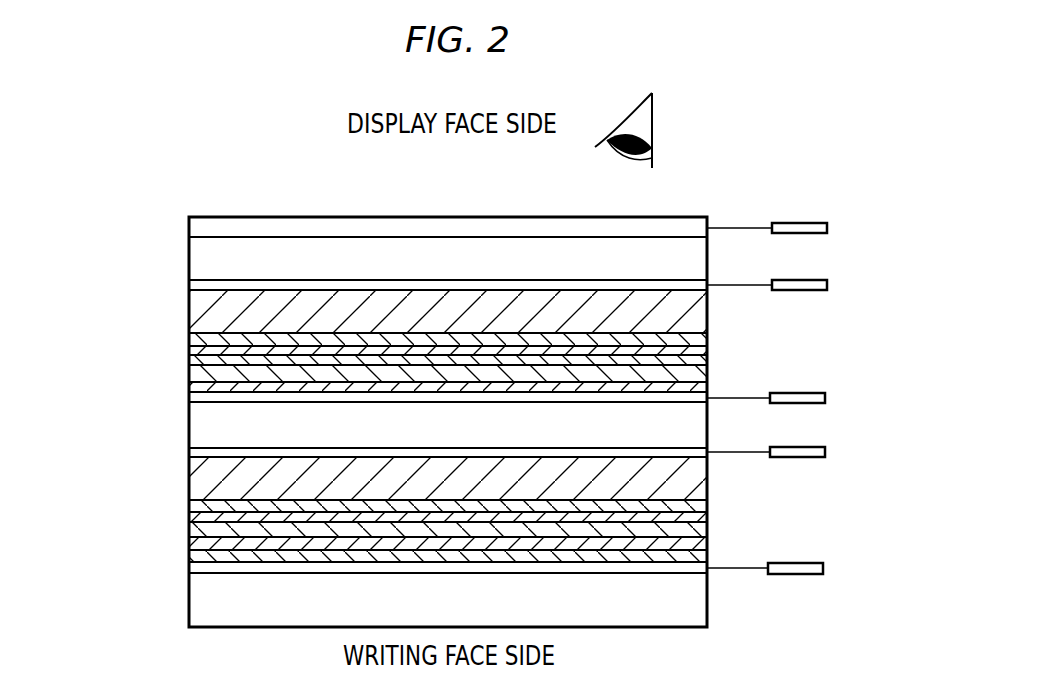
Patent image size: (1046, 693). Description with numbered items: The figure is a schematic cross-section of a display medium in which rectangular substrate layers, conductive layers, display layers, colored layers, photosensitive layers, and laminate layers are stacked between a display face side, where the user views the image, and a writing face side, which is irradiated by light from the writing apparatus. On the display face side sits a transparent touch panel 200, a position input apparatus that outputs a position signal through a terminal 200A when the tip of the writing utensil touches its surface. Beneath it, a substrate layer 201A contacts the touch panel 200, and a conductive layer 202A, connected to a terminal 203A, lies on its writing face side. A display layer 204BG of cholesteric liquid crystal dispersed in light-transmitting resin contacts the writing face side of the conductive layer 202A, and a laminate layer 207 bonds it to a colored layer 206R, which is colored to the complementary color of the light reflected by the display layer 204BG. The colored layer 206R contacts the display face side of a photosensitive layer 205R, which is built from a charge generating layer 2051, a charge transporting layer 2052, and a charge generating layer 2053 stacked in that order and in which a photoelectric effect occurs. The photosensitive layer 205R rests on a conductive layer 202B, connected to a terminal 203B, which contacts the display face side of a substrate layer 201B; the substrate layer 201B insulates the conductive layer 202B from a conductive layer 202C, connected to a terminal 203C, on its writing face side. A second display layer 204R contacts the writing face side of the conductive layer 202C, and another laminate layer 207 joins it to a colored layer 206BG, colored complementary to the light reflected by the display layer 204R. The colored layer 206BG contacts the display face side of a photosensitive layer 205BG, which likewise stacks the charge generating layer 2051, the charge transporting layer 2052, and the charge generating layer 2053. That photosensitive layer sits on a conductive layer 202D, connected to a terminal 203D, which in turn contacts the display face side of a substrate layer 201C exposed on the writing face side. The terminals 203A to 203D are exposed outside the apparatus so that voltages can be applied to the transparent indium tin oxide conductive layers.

The touch panel 200 is at (190, 220).
The terminal 200A is at (855, 210).
The substrate layer 201A is at (197, 262).
The substrate layer 201B is at (194, 435).
The substrate layer 201C is at (192, 607).
The conductive layer 202A is at (197, 287).
The conductive layer 202B is at (195, 405).
The conductive layer 202C is at (192, 462).
The conductive layer 202D is at (192, 568).
The terminal 203A is at (855, 268).
The terminal 203B is at (852, 379).
The terminal 203C is at (852, 435).
The terminal 203D is at (823, 576).
The display layer 204BG is at (707, 313).
The display layer 204R is at (193, 488).
The photosensitive layer 205R is at (102, 348).
The photosensitive layer 205BG is at (805, 475).
The charge generating layer 2051 is at (193, 360).
The charge transporting layer 2052 is at (197, 377).
The charge generating layer 2053 is at (195, 393).
The colored layer 206R is at (197, 347).
The colored layer 206BG is at (193, 523).
The laminate layer 207 is at (200, 337).